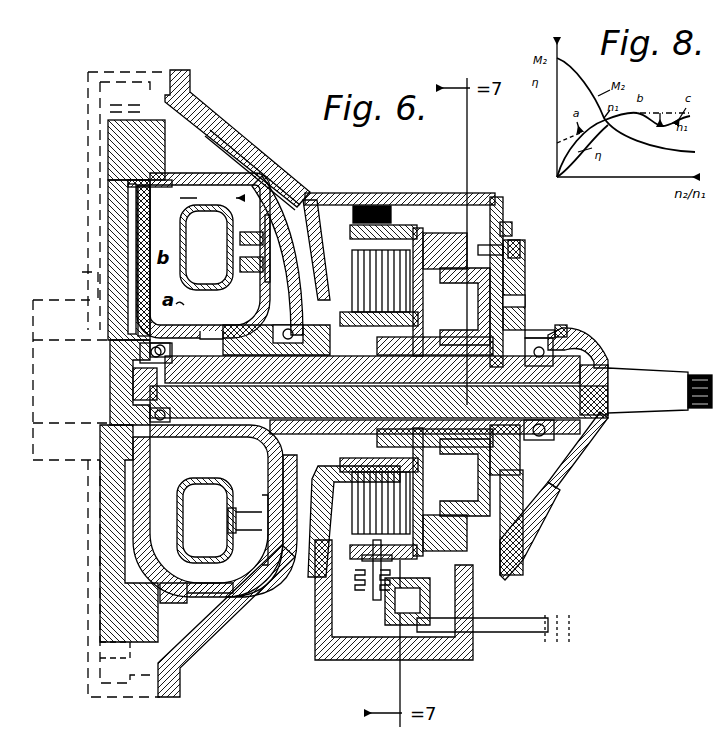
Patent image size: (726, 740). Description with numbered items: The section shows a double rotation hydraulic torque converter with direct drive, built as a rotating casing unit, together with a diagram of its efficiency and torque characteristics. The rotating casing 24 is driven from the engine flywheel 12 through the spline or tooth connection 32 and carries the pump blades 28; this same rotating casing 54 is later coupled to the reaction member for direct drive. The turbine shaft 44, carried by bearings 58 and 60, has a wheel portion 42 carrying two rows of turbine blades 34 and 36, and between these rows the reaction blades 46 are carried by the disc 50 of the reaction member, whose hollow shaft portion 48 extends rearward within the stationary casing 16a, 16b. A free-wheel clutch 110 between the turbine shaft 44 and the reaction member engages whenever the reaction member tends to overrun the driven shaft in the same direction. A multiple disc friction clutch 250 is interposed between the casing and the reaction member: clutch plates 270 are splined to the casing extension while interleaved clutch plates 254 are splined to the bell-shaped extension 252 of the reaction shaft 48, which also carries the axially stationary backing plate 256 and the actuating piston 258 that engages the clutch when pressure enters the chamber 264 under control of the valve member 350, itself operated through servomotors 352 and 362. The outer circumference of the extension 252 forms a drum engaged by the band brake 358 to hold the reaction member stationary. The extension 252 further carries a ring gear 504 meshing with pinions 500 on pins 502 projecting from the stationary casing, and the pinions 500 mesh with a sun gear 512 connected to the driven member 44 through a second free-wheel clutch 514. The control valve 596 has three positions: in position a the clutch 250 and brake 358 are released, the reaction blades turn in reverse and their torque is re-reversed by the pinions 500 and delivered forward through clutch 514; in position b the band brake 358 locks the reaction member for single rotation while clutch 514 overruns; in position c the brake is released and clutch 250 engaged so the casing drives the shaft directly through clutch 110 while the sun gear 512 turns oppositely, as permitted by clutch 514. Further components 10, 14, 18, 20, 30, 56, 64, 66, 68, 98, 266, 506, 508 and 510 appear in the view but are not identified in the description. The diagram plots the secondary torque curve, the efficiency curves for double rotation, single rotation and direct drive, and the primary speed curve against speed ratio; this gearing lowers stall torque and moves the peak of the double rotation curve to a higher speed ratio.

The engine housing outline 10 is at (100, 384).
The engine flywheel 12 is at (118, 139).
The housing chamber 14 is at (197, 152).
The stationary casing 16a is at (217, 125).
The stationary casing 16b is at (505, 262).
The engine flange 18 is at (95, 98).
The housing member 20 is at (155, 240).
The rotating casing 24 is at (148, 200).
The pump blades 28 is at (174, 291).
The bearing housing 30 is at (122, 352).
The spline or tooth connection 32 is at (140, 183).
The turbine blades 34 is at (248, 230).
The turbine blades 36 is at (247, 278).
The wheel portion 42 is at (170, 470).
The turbine shaft 44 is at (654, 411).
The reaction blades 46 is at (252, 255).
The hollow shaft portion 48 is at (372, 369).
The disc 50 is at (297, 250).
The rotating casing 54 is at (240, 170).
The flow direction 56 is at (212, 198).
The bearing 58 is at (118, 428).
The bearing 60 is at (555, 432).
The lower diagonal wall 64 is at (240, 572).
The housing wedge 66 is at (522, 500).
The coupling hub 68 is at (240, 317).
The shaft bearing 98 is at (140, 383).
The free-wheel clutch 110 is at (532, 473).
The multiple disc friction clutch 250 is at (401, 251).
The bell-shaped extension 252 is at (410, 255).
The clutch plates 254 is at (393, 220).
The backing plate 256 is at (371, 281).
The clutch actuating plate or piston 258 is at (475, 230).
The chamber 264 is at (498, 226).
The ring 266 is at (504, 248).
The clutch plates 270 is at (375, 299).
The valve member 350 is at (467, 200).
The servomotor 352 is at (415, 657).
The band brake 358 is at (372, 204).
The servomotor 362 is at (345, 657).
The pinions 500 is at (530, 300).
The pins 502 is at (530, 322).
The ring gear 504 is at (518, 275).
The cover 506 is at (595, 350).
The ball bearing 508 is at (565, 344).
The ring 510 is at (575, 332).
The sun gear 512 is at (585, 333).
The free-wheel clutch 514 is at (547, 447).
The control valve 596 is at (542, 622).